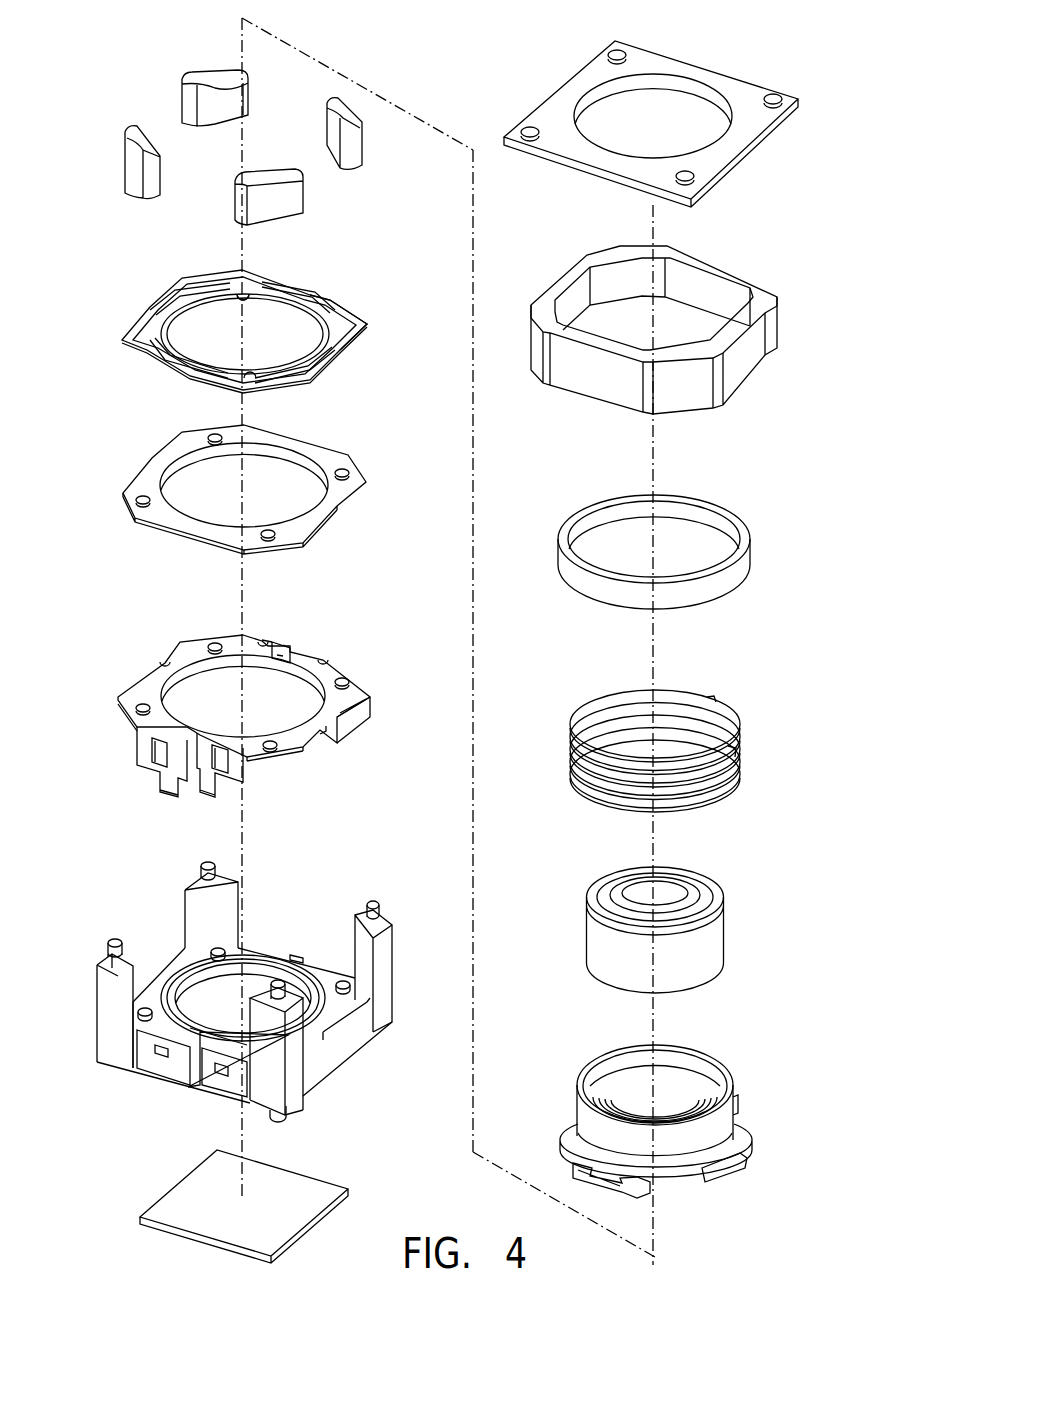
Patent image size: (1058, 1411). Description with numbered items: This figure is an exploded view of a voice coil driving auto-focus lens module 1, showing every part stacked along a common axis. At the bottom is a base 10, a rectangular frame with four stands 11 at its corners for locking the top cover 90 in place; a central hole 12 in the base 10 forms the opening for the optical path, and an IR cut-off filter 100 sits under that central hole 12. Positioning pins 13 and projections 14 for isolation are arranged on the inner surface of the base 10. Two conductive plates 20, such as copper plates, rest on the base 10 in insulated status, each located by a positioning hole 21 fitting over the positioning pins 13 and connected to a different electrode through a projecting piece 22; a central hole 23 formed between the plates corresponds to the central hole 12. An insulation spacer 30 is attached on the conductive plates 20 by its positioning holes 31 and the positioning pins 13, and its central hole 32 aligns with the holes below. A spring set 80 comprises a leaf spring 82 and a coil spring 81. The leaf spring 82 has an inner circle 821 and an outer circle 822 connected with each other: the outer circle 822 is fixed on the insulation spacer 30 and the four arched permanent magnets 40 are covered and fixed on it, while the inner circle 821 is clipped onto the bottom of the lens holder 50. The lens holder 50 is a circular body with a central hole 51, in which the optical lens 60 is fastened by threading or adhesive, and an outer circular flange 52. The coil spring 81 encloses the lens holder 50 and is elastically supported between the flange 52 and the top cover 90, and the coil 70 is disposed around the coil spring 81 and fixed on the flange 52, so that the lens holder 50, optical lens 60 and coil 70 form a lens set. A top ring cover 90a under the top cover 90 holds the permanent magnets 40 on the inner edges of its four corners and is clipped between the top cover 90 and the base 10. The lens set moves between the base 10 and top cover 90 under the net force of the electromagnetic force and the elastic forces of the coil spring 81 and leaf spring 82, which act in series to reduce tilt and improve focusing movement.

The voice coil driving auto-focus lens module 1 is at (769, 53).
The base 10 is at (249, 992).
The stands 11 is at (208, 895).
The central hole 12 is at (215, 1004).
The positioning pins 13 is at (218, 945).
The projections 14 is at (294, 960).
The conductive plates 20 is at (247, 721).
The positioning hole 21 is at (214, 645).
The projecting piece 22 is at (193, 791).
The central hole 23 is at (267, 697).
The insulation spacer 30 is at (240, 487).
The positioning holes 31 is at (213, 436).
The central hole 32 is at (273, 475).
The permanent magnets 40 is at (148, 90).
The lens holder 50 is at (674, 1114).
The central hole 51 is at (635, 1070).
The outer circular flange 52 is at (733, 1160).
The optical lens 60 is at (728, 922).
The coil 70 is at (707, 498).
The spring set 80 is at (453, 511).
The coil spring 81 is at (715, 694).
The leaf spring 82 is at (167, 284).
The inner circle 821 is at (243, 297).
The outer circle 822 is at (357, 315).
The top cover 90 is at (740, 154).
The top ring cover 90a is at (747, 370).
The IR cut-off filter 100 is at (181, 1177).